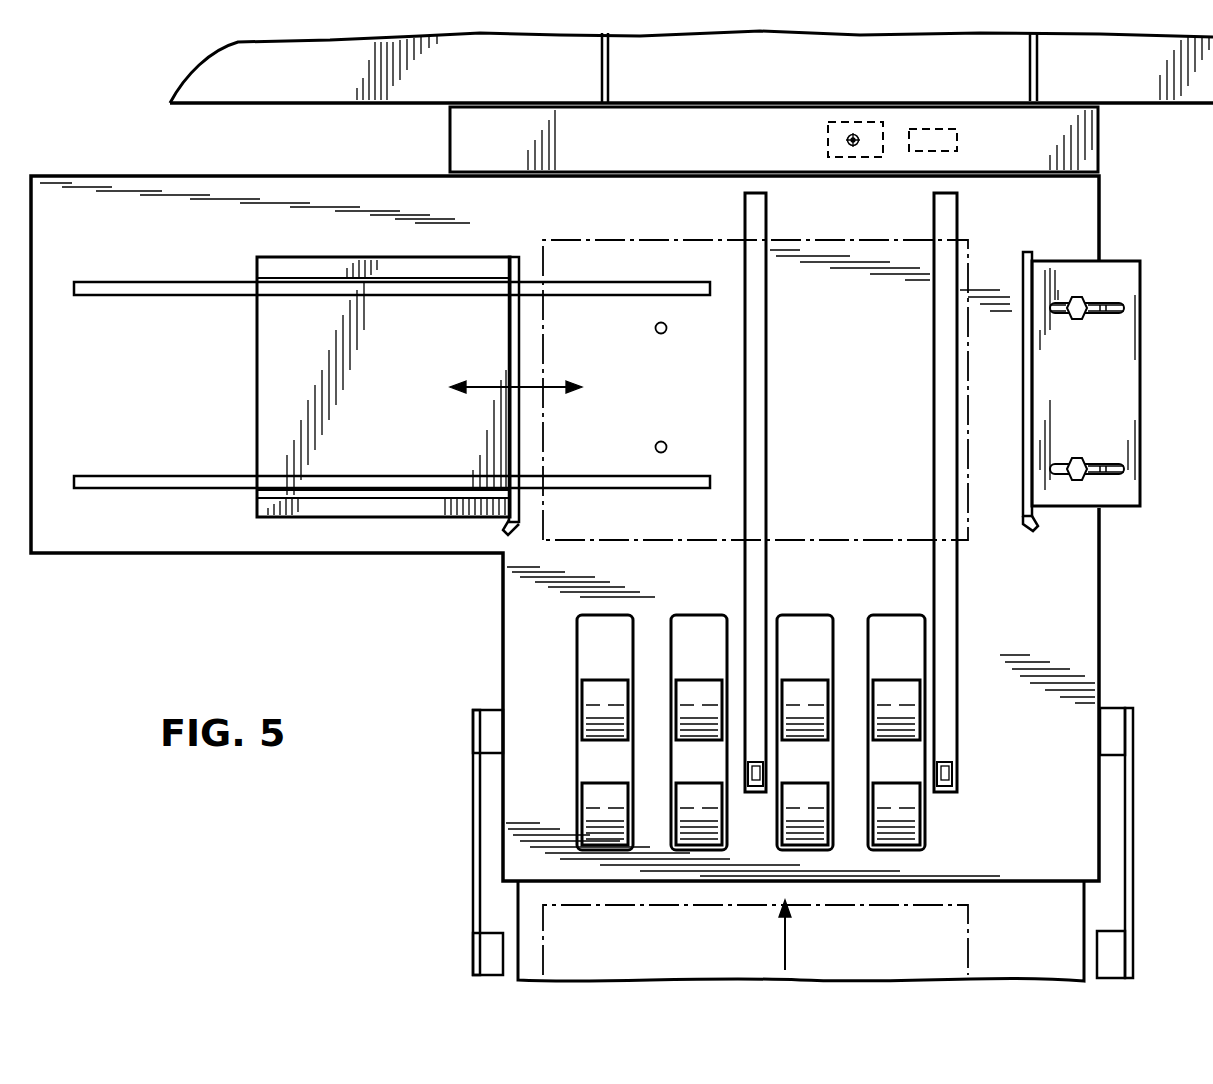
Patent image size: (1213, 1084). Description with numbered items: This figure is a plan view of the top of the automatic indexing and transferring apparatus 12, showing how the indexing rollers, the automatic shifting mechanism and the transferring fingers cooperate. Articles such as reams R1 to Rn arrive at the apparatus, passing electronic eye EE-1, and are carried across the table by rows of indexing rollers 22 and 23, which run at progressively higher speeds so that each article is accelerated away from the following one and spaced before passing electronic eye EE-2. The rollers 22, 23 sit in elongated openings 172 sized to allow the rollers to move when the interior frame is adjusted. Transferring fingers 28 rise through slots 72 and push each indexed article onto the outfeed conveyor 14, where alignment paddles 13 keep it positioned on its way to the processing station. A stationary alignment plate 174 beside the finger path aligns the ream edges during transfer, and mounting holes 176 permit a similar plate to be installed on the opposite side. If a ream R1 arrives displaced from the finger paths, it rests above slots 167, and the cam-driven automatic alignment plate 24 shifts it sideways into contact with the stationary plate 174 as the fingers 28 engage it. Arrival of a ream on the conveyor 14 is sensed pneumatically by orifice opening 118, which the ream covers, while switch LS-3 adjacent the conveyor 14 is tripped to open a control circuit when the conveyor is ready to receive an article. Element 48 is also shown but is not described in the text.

The automatic indexing and transferring apparatus 12 is at (1125, 556).
The alignment paddles 13 is at (616, 66).
The outfeed conveyor 14 is at (683, 59).
The indexing rollers 22 is at (690, 802).
The indexing rollers 23 is at (690, 699).
The automatic alignment plate 24 is at (511, 366).
The transferring fingers 28 is at (752, 786).
The bar 48 is at (1133, 857).
The slots 72 is at (758, 597).
The orifice opening 118 is at (830, 142).
The slots 167 is at (176, 258).
The elongated openings 172 is at (686, 612).
The stationary alignment plate 174 is at (1034, 441).
The mounting holes 176 is at (666, 324).
The switch LS-3 is at (957, 140).
The photocell or electronic eye EE-1 is at (1112, 955).
The photocell or electronic eye EE-2 is at (1114, 743).
The article or ream R1 is at (755, 390).
The article or ream Rn is at (755, 937).